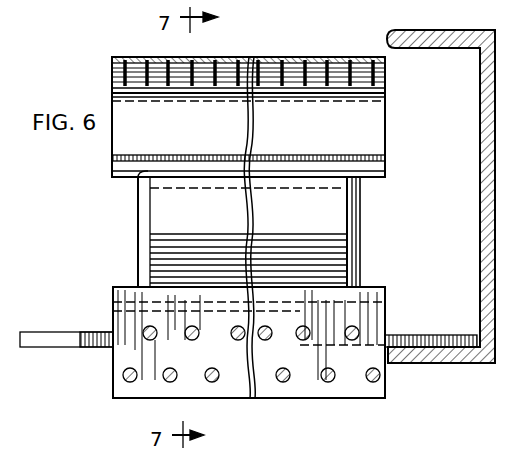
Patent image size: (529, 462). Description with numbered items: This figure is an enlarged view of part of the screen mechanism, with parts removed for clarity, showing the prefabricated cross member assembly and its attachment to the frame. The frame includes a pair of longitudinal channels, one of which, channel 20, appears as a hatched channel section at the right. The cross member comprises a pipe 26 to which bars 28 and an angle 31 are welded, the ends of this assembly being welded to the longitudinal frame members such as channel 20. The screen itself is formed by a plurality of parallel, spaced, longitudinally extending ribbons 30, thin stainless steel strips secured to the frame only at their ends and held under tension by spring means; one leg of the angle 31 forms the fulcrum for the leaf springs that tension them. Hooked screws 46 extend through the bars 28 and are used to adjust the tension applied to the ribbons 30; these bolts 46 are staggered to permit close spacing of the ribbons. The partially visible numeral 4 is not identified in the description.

The channel 20 is at (488, 213).
The pipe 26 is at (162, 221).
The bars 28 is at (312, 393).
The ribbons 30 is at (329, 57).
The angle 31 is at (386, 167).
The hooked screws 46 is at (331, 378).
The frame 4 is at (518, 165).